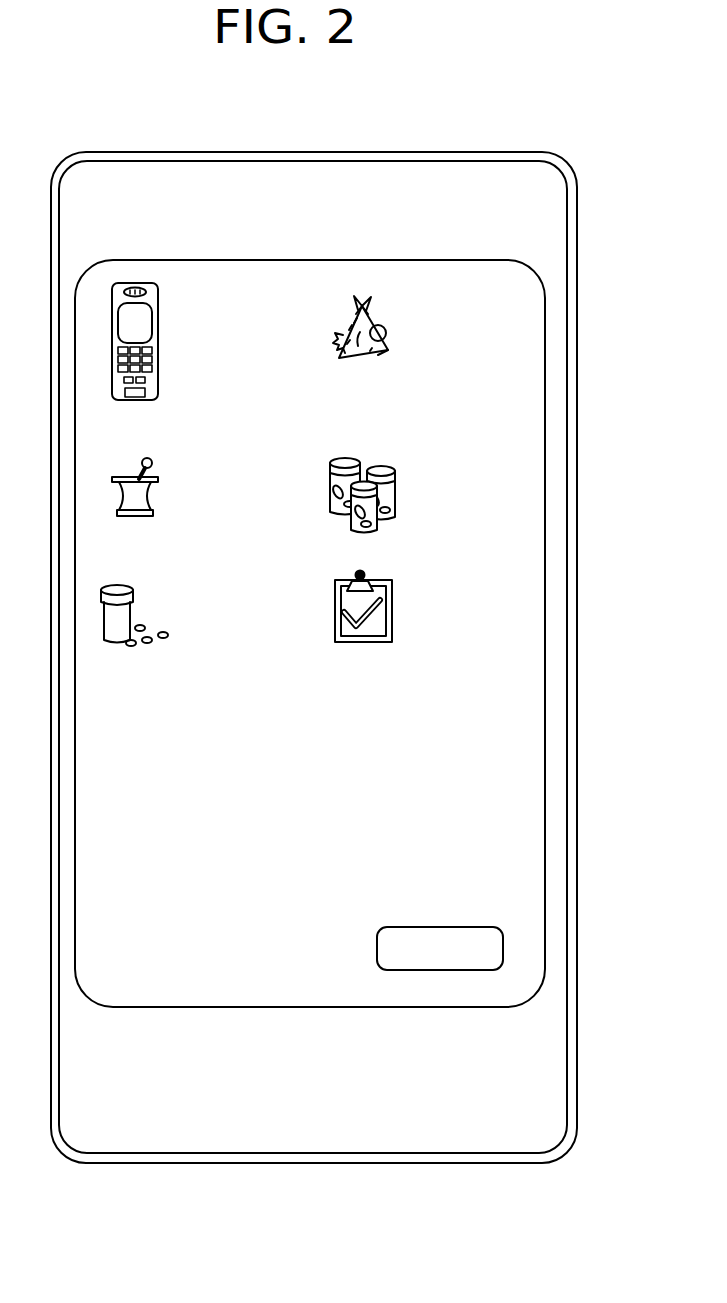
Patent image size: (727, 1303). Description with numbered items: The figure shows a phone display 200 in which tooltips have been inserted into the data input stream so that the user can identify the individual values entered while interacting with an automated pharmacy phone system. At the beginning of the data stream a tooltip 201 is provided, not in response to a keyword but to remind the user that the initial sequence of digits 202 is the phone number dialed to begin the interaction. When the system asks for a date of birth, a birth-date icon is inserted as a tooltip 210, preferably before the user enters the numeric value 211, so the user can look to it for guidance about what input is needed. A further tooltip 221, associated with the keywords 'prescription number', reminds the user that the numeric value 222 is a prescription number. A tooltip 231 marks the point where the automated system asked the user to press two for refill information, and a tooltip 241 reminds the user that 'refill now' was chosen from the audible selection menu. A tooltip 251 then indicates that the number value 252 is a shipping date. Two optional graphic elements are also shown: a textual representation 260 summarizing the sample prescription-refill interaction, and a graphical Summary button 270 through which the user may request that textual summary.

The phone display 200 is at (170, 152).
The tooltip 201 is at (158, 365).
The initial sequence of digits 202 is at (213, 322).
The tooltip 210 is at (372, 363).
The numeric value 211 is at (425, 323).
The tooltip 221 is at (148, 515).
The numeric value 222 is at (203, 482).
The tooltip 231 is at (388, 517).
The tooltip 241 is at (120, 642).
The tooltip 251 is at (355, 642).
The number value 252 is at (433, 592).
The textual representation 260 is at (173, 802).
The Summary button 270 is at (377, 943).